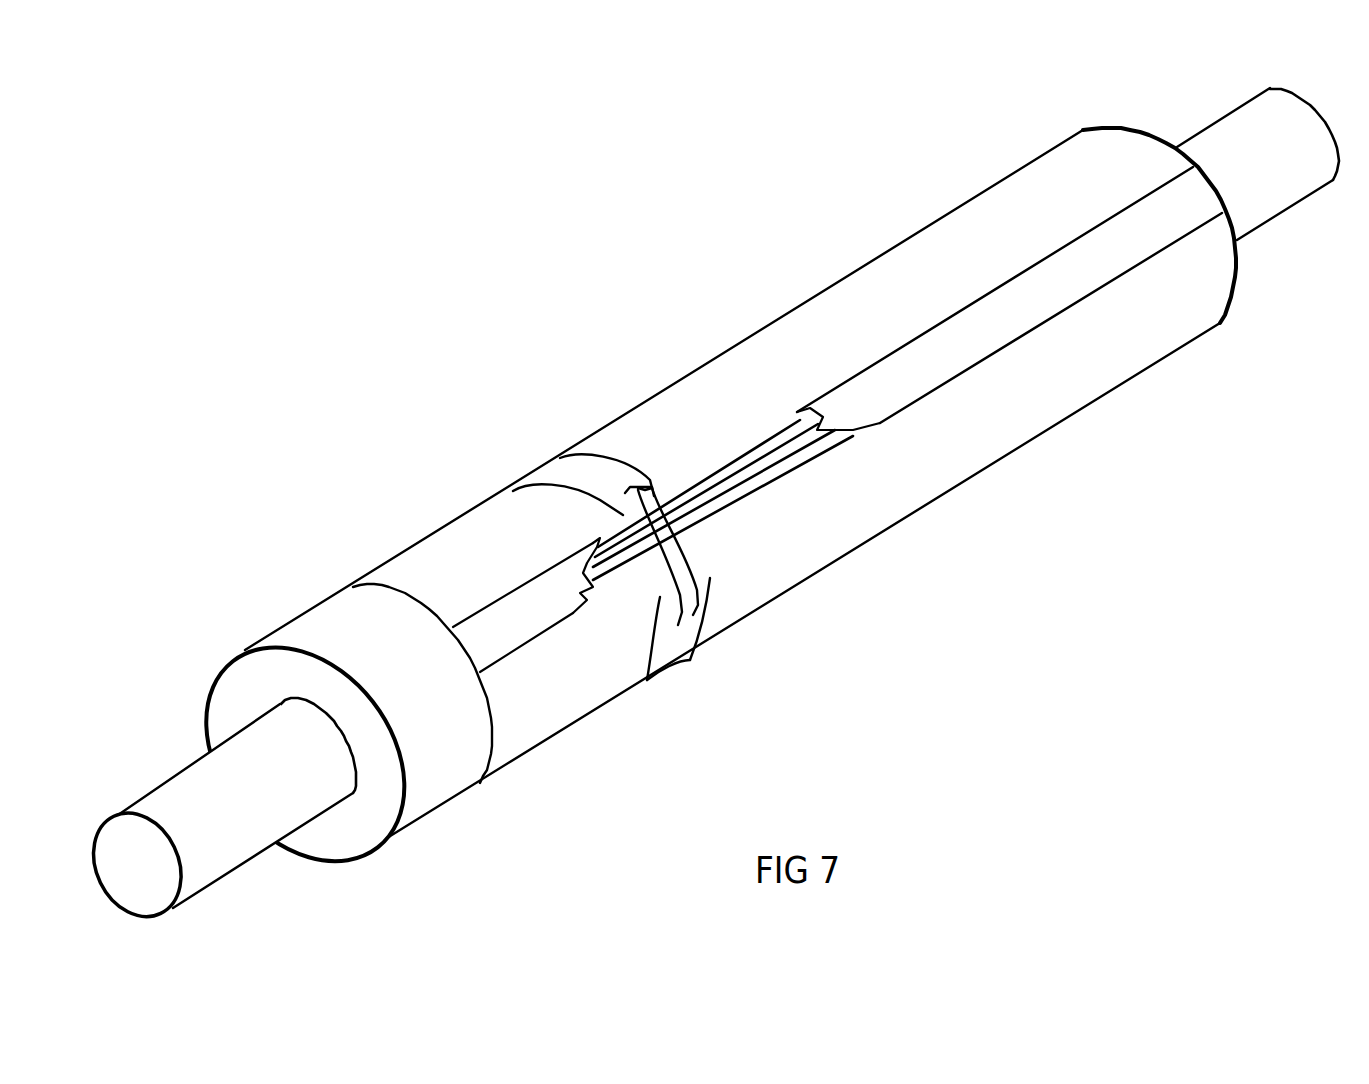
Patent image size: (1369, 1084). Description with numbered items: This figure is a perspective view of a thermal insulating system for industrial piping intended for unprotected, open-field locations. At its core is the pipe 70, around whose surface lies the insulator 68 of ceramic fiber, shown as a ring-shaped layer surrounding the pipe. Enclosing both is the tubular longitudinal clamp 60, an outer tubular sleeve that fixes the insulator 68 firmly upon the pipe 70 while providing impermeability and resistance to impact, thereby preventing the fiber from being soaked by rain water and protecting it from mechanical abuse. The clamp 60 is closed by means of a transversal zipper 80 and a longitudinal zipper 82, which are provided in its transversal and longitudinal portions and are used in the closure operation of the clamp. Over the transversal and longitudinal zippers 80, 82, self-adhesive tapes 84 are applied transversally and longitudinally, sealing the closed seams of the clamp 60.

The tubular longitudinal clamp 60 is at (935, 475).
The insulator 68 is at (252, 693).
The pipe 70 is at (213, 860).
The transversal zipper 80 is at (660, 507).
The longitudinal zipper 82 is at (792, 453).
The self-adhesive tape 84 is at (572, 462).